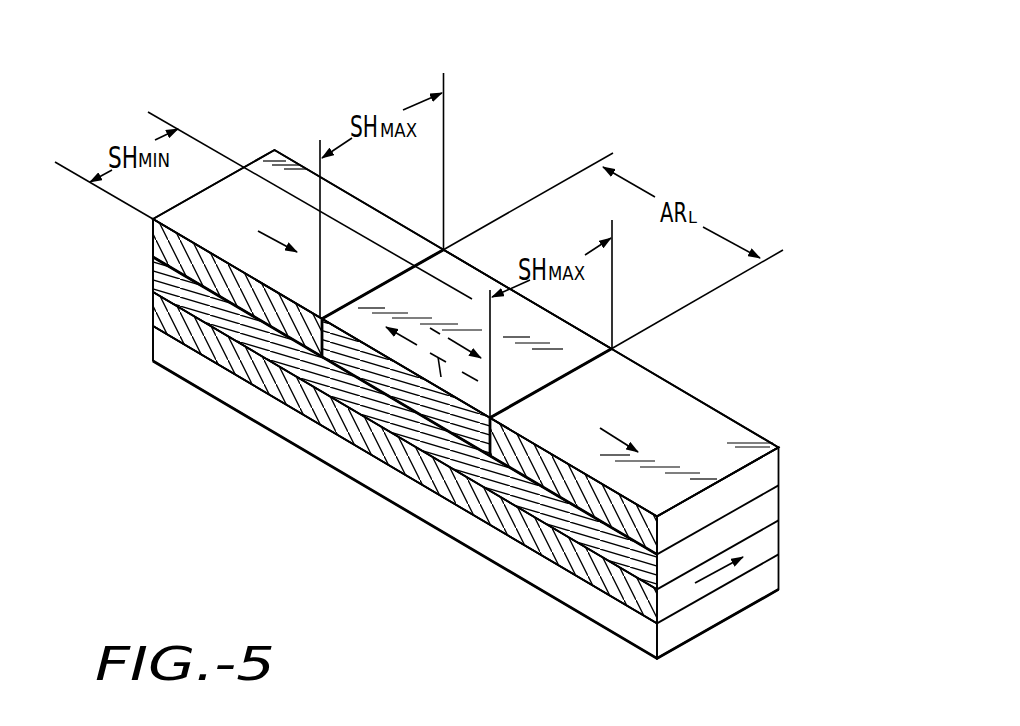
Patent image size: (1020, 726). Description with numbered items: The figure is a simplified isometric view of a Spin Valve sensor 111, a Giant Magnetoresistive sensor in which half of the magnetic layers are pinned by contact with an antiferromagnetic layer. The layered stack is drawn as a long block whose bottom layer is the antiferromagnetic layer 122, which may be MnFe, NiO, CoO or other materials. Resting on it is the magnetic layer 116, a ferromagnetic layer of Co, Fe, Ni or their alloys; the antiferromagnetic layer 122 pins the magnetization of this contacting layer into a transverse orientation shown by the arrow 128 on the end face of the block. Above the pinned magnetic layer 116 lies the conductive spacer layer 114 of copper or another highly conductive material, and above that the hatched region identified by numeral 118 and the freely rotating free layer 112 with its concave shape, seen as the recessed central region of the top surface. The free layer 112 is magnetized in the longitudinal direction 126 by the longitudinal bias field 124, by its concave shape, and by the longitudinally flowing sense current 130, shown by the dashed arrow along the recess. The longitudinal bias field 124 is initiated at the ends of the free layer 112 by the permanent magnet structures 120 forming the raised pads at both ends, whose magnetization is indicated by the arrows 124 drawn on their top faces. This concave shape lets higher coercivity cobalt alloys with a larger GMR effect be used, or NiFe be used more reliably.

The Spin Valve sensor 111 is at (392, 547).
The free layer 112 is at (445, 264).
The conductive spacer layer 114 is at (150, 260).
The magnetic layer 116 is at (150, 302).
The soft adjacent layer 118 is at (268, 347).
The permanent magnet structures 120 is at (268, 156).
The antiferromagnetic layer 122 is at (172, 361).
The longitudinal bias field 124 is at (258, 231).
The longitudinal direction 126 is at (457, 338).
The arrow indicating transverse magnetic orientation 128 is at (718, 586).
The sense current 130 is at (368, 452).